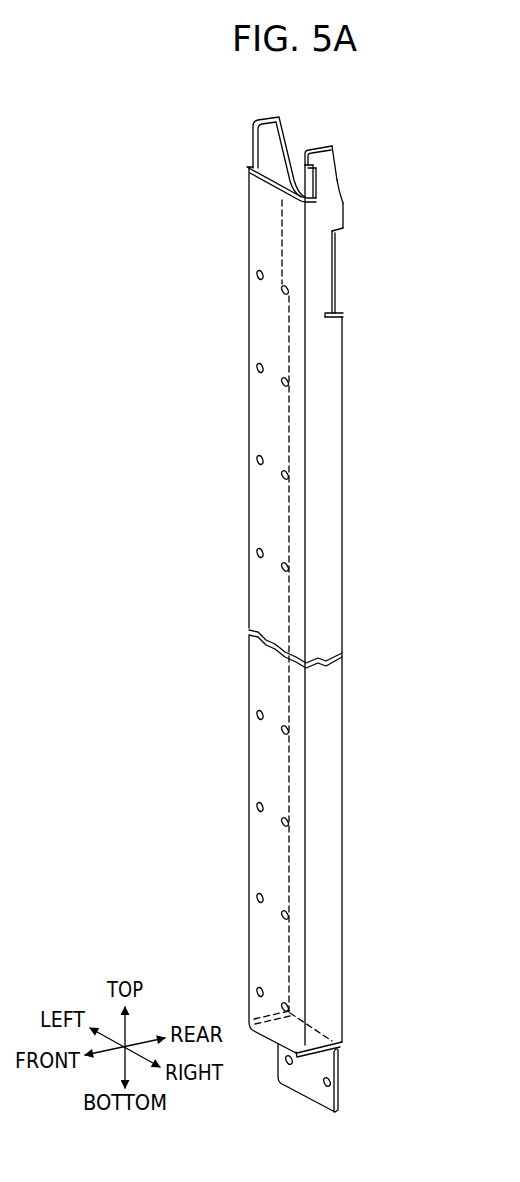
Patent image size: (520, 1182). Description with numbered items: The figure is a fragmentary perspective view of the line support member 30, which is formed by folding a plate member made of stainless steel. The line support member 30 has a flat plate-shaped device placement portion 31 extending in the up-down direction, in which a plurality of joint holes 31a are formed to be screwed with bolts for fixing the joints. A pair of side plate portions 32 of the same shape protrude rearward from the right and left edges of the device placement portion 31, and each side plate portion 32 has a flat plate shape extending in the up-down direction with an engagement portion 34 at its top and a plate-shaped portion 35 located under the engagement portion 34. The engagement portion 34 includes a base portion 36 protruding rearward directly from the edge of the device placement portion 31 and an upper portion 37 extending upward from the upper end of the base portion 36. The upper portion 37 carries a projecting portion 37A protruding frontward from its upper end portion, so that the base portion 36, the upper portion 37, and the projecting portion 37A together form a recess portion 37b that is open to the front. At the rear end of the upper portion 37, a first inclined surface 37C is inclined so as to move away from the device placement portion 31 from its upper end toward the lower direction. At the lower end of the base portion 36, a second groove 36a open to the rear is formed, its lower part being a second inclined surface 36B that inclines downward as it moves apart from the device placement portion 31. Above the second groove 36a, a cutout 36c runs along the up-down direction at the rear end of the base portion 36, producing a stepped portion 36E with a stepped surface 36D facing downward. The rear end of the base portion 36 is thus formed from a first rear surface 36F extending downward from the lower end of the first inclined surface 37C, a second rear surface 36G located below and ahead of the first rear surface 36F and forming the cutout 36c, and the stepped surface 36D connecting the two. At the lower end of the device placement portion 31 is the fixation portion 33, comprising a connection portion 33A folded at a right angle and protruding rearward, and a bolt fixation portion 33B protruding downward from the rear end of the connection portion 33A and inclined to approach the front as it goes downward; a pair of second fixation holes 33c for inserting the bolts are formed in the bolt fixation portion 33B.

The line support member 30 is at (404, 121).
The device placement portion 31 is at (263, 593).
The joint holes 31a is at (258, 460).
The side plate portions 32 is at (343, 557).
The fixation portion 33 is at (262, 1074).
The connection portion 33A is at (340, 1048).
The bolt fixation portion 33B is at (340, 1086).
The second fixation holes 33c is at (327, 1086).
The engagement portion 34 is at (438, 257).
The plate-shaped portion 35 is at (323, 632).
The base portion 36 is at (267, 225).
The second groove 36a is at (332, 313).
The second inclined surface 36B is at (343, 318).
The cutout 36c is at (335, 271).
The stepped surface 36D is at (336, 233).
The stepped portion 36E is at (356, 228).
The first rear surface 36F is at (344, 207).
The second rear surface 36G is at (335, 289).
The upper portion 37 is at (272, 143).
The projecting portion 37A is at (311, 154).
The recess portion 37b is at (301, 180).
The first inclined surface 37C is at (337, 165).